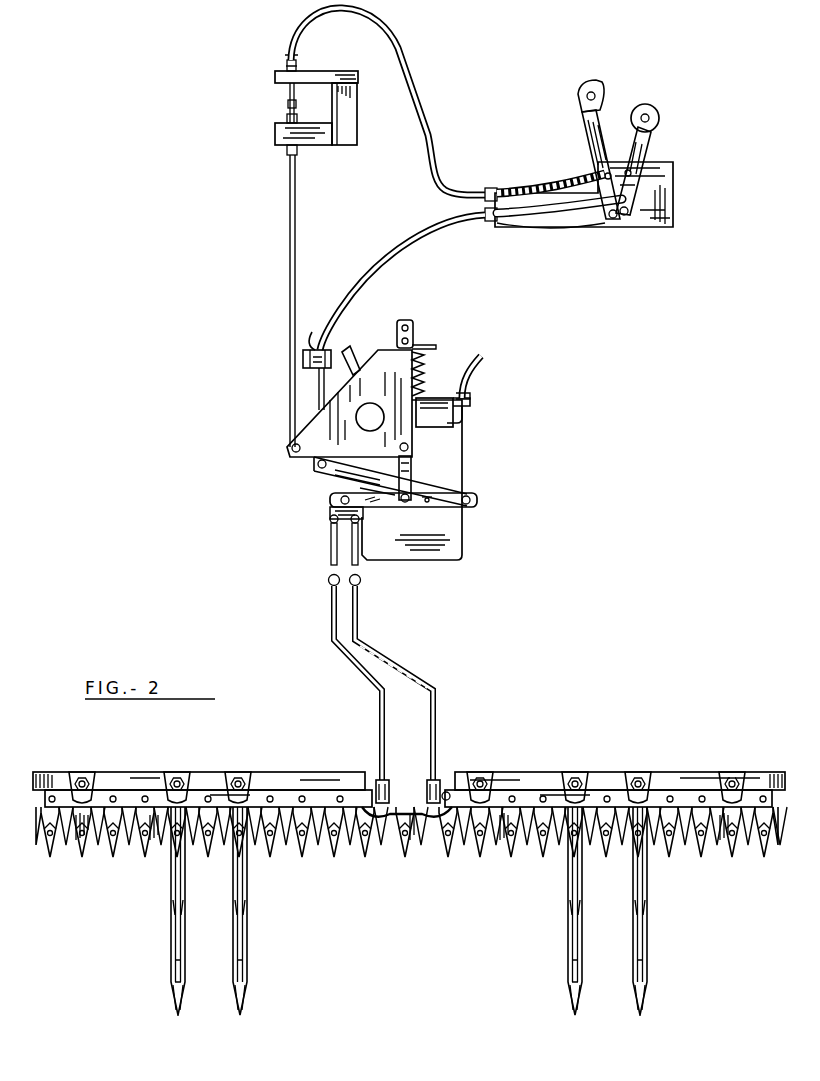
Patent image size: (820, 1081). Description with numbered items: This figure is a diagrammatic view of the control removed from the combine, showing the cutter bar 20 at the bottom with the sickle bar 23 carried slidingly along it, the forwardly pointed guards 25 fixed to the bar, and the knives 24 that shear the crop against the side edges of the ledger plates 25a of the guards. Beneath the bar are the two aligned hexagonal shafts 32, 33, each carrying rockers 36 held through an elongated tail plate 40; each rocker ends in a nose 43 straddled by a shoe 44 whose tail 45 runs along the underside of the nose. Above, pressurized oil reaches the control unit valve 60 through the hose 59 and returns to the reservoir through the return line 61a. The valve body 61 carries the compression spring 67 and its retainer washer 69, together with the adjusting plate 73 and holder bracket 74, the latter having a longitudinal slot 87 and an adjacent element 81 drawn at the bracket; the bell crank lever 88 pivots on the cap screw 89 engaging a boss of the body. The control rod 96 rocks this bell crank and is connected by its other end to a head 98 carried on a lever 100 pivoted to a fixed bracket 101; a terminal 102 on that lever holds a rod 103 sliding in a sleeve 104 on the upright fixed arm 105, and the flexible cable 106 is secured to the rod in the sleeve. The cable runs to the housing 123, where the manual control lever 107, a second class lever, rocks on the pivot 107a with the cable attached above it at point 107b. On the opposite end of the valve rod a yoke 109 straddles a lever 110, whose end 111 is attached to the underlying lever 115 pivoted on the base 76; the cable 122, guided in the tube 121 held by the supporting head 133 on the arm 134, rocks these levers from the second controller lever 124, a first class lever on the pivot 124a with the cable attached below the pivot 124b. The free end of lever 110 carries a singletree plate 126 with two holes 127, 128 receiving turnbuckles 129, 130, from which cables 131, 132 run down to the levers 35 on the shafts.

The cutter bar 20 is at (139, 778).
The sickle bar 23 is at (72, 790).
The knives 24 is at (163, 838).
The guards 25 is at (120, 859).
The ledger plates 25a is at (48, 835).
The shaft 32 is at (444, 790).
The shaft 33 is at (376, 782).
The lever 35 is at (412, 785).
The rocker 36 is at (167, 993).
The tail plate 40 is at (186, 889).
The nose 43 is at (240, 896).
The shoe 44 is at (238, 1028).
The tail 45 is at (184, 961).
The hose 59 is at (356, 357).
The control unit valve 60 is at (445, 388).
The valve body 61 is at (467, 421).
The return line 61a is at (473, 401).
The compression spring 67 is at (411, 369).
The washer 69 is at (427, 361).
The adjusting plate 73 is at (432, 345).
The holder bracket 74 is at (398, 329).
The base 76 is at (464, 533).
The pin 81 is at (409, 341).
The longitudinal slot 87 is at (409, 325).
The bell crank lever 88 is at (304, 454).
The cap screw 89 is at (409, 448).
The control rod 96 is at (290, 238).
The head 98 is at (287, 152).
The lever 100 is at (302, 138).
The bracket 101 is at (346, 116).
The terminal 102 is at (287, 119).
The rod 103 is at (288, 104).
The sleeve 104 is at (297, 97).
The upright fixed arm 105 is at (316, 75).
The flexible cable 106 is at (397, 50).
The manual control lever 107 is at (585, 97).
The pivot 107a is at (609, 224).
The point 107b is at (604, 172).
The yoke 109 is at (412, 467).
The lever 110 is at (427, 505).
The end 111 is at (474, 499).
The lever 115 is at (448, 490).
The tube 121 is at (318, 396).
The cable 122 is at (362, 269).
The housing 123 is at (540, 188).
The second controller lever 124 is at (659, 119).
The pivot 124a is at (632, 174).
The pivot 124b is at (630, 215).
The plate 126 is at (330, 503).
The hole 127 is at (330, 519).
The hole 128 is at (359, 519).
The turnbuckle 129 is at (331, 549).
The turnbuckle 130 is at (358, 549).
The cable 131 is at (331, 606).
The cable 132 is at (360, 616).
The supporting head 133 is at (332, 357).
The arm 134 is at (314, 346).